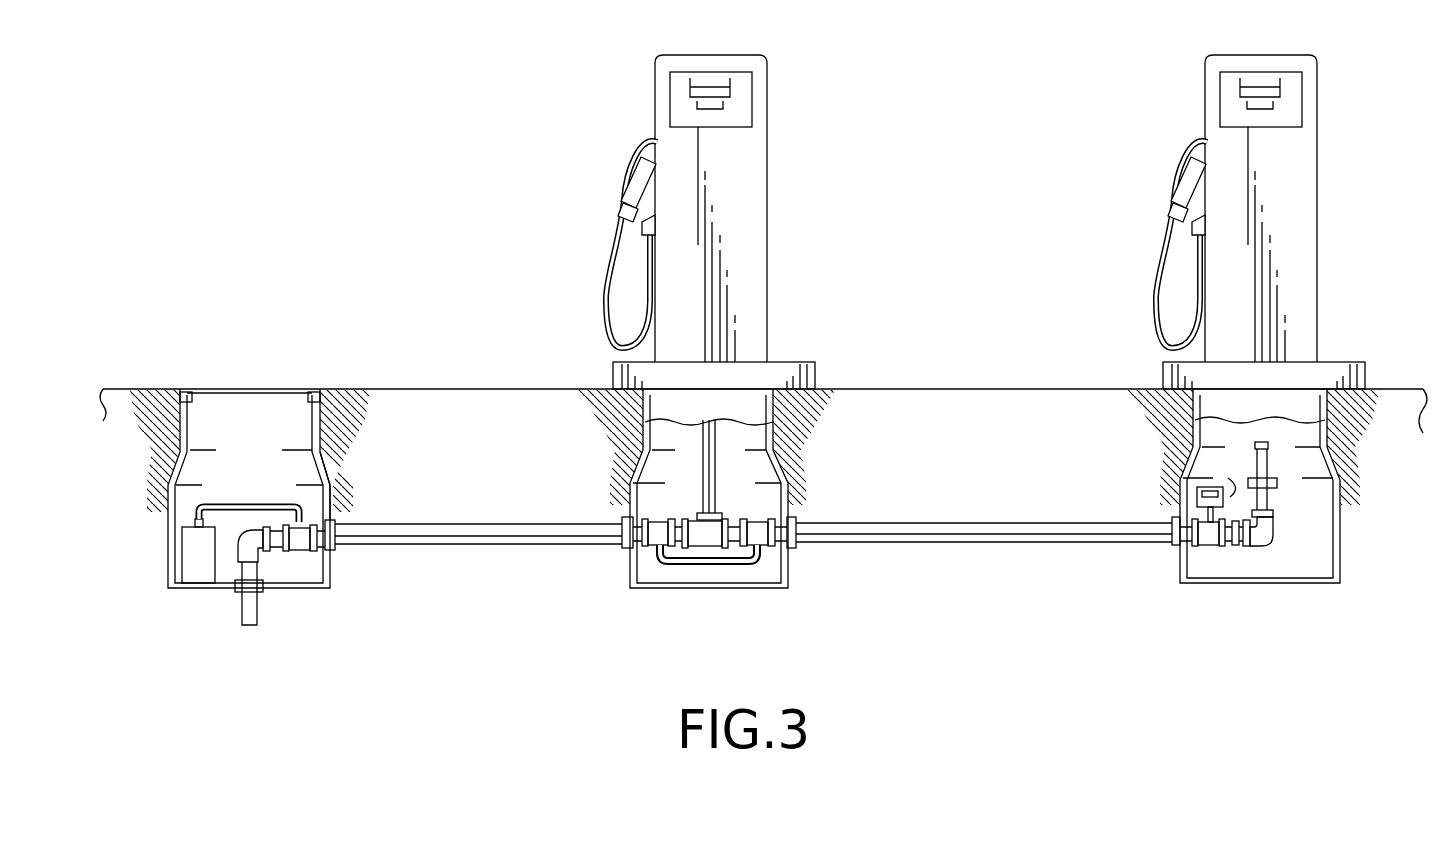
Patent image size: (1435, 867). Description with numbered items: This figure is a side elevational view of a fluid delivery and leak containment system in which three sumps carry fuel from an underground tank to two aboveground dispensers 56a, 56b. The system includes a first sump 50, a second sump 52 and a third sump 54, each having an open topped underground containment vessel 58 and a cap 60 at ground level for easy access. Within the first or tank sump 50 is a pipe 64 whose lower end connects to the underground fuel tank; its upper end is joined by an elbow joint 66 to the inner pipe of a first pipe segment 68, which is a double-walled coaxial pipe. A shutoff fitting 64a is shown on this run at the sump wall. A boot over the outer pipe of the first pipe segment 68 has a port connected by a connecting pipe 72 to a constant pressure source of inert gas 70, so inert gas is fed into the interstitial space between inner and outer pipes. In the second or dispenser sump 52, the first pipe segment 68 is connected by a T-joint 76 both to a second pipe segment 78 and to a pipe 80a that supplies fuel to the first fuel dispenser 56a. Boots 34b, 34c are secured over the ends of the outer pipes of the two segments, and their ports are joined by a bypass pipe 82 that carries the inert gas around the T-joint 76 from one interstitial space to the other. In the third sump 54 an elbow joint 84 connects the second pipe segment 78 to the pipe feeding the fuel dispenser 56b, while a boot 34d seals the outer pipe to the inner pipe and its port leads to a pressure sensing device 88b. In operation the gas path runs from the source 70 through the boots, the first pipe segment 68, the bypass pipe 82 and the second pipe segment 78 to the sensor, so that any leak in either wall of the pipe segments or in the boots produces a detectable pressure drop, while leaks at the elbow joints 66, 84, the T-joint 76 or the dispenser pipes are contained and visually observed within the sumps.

The first sump 50 is at (217, 408).
The cap 60 is at (283, 390).
The containment vessel 58 is at (330, 488).
The constant pressure source of an inert gas 70 is at (190, 577).
The connecting pipe 72 is at (212, 505).
The elbow joint 66 is at (248, 538).
The pipe 64 is at (255, 627).
The shutoff valve 64a is at (303, 548).
The first pipe segment 68 is at (492, 540).
The second sump 52 is at (790, 455).
The first fuel dispenser 56a is at (757, 182).
The fuel dispenser 56b is at (1260, 222).
The pipe supplying fuel to the first fuel dispenser 80a is at (713, 468).
The T-joint 76 is at (707, 547).
The boot 34b is at (652, 542).
The boot 34c is at (770, 548).
The boot 34d is at (1212, 538).
The bypass pipe 82 is at (672, 567).
The second pipe segment 78 is at (945, 535).
The third sump 54 is at (1337, 450).
The elbow joint 84 is at (1258, 537).
The flow meter 88b is at (1198, 500).